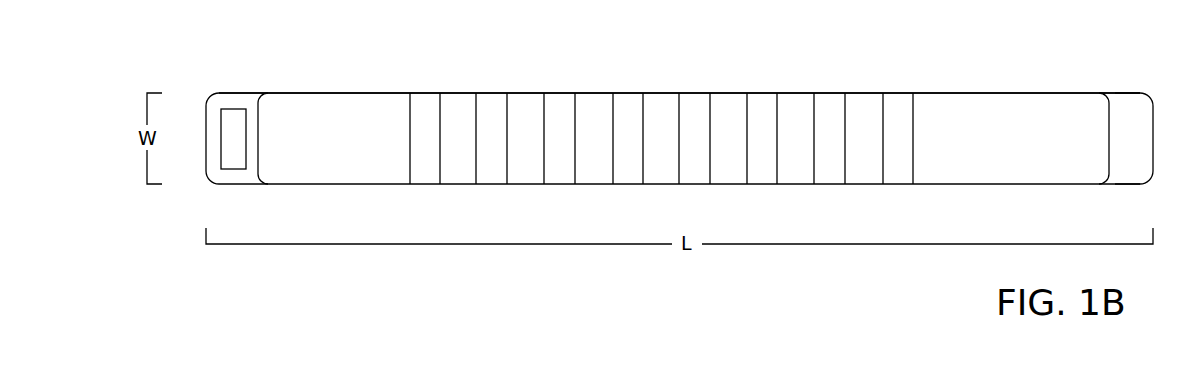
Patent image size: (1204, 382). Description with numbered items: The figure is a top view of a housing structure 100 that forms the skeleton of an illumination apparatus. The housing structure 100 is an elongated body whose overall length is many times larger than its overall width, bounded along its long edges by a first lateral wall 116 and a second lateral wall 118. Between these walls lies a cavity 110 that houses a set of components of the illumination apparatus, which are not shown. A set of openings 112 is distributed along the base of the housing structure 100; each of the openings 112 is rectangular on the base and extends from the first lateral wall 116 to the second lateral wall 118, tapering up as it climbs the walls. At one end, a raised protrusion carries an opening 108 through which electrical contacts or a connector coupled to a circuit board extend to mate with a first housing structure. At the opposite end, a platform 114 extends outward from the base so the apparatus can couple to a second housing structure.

The housing structure 100 is at (704, 126).
The opening 108 is at (235, 125).
The cavity 110 is at (332, 128).
The openings 112 is at (492, 112).
The platform 114 is at (1130, 127).
The first lateral wall 116 is at (955, 184).
The second lateral wall 118 is at (963, 92).